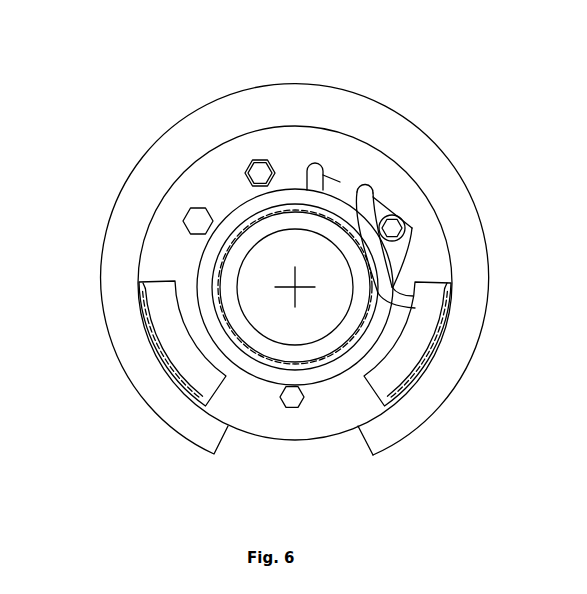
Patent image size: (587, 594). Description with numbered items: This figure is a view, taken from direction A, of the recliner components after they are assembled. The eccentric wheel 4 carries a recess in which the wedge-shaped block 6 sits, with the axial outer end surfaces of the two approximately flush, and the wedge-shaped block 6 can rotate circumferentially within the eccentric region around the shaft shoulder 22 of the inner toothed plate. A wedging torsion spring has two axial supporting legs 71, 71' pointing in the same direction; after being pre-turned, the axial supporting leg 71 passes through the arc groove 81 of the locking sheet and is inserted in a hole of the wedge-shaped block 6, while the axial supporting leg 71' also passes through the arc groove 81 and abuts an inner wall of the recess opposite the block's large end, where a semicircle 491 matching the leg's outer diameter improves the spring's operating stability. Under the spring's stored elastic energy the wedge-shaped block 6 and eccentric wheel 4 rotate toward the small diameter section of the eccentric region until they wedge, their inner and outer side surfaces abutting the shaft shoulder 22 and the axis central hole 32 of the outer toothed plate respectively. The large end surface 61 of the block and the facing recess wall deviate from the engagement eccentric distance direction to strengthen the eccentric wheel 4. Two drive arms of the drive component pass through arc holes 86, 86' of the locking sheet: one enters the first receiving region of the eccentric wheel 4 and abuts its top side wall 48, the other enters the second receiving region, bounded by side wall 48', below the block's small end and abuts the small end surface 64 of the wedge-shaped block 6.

The eccentric wheel 4 is at (268, 269).
The wedge-shaped block 6 is at (451, 235).
The shaft shoulder 22 is at (219, 309).
The axis central hole 32 is at (208, 304).
The top side wall 48 is at (135, 321).
The right brake pad 48' is at (460, 344).
The large end surface 61 is at (386, 155).
The small end surface 64 is at (466, 327).
The axial supporting leg 71 is at (413, 123).
The axial supporting leg 71' is at (353, 100).
The arc groove 81 is at (431, 152).
The right pad lip 86 is at (470, 343).
The arc hole 86' is at (124, 339).
The semicircle 491 is at (328, 104).